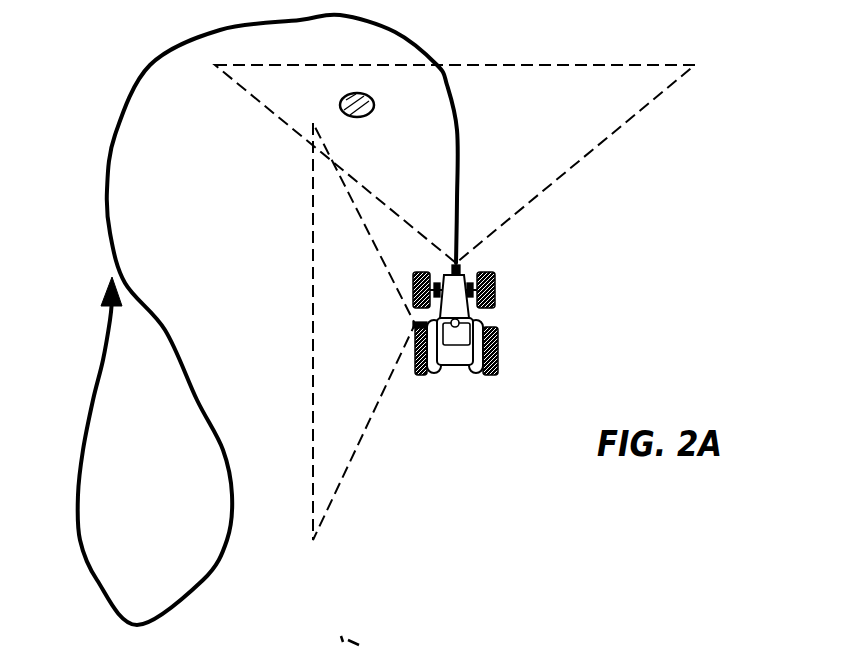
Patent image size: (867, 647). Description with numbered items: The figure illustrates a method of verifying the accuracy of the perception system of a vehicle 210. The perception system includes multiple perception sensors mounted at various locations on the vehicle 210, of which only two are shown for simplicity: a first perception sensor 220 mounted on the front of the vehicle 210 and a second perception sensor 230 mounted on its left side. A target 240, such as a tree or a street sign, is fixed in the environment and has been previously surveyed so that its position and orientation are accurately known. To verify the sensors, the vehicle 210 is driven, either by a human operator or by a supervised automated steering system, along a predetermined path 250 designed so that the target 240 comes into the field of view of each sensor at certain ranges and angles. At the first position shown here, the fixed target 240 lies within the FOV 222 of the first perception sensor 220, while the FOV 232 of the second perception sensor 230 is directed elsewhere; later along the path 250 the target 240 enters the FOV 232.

The vehicle 210 is at (452, 288).
The first perception sensor 220 is at (452, 267).
The FOV of the first perception sensor 222 is at (540, 157).
The second perception sensor 230 is at (418, 325).
The FOV of the second perception sensor 232 is at (348, 428).
The target 240 is at (341, 100).
The predetermined path 250 is at (116, 134).